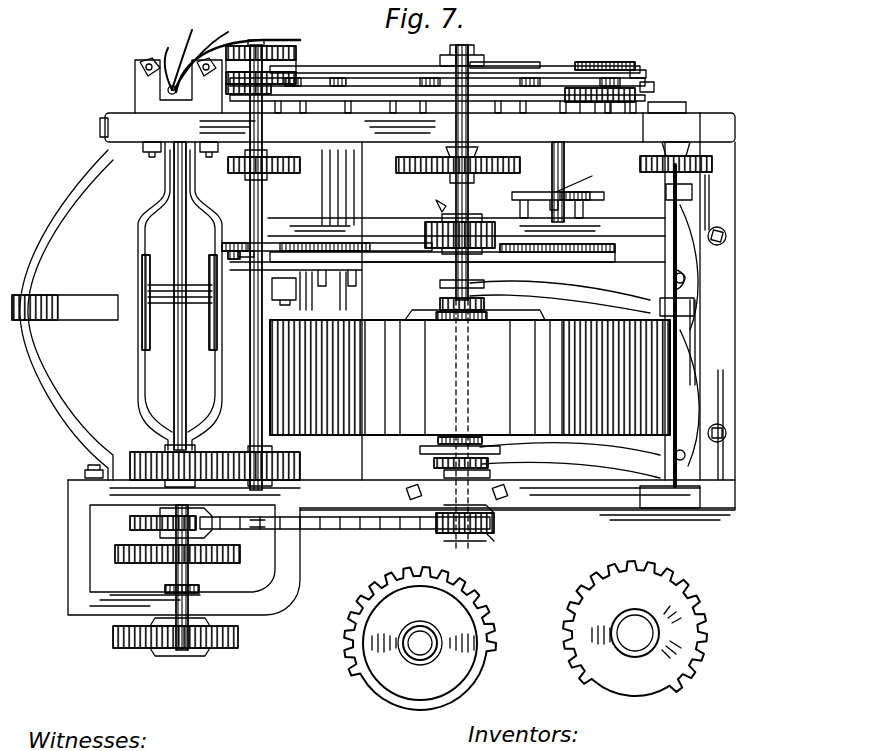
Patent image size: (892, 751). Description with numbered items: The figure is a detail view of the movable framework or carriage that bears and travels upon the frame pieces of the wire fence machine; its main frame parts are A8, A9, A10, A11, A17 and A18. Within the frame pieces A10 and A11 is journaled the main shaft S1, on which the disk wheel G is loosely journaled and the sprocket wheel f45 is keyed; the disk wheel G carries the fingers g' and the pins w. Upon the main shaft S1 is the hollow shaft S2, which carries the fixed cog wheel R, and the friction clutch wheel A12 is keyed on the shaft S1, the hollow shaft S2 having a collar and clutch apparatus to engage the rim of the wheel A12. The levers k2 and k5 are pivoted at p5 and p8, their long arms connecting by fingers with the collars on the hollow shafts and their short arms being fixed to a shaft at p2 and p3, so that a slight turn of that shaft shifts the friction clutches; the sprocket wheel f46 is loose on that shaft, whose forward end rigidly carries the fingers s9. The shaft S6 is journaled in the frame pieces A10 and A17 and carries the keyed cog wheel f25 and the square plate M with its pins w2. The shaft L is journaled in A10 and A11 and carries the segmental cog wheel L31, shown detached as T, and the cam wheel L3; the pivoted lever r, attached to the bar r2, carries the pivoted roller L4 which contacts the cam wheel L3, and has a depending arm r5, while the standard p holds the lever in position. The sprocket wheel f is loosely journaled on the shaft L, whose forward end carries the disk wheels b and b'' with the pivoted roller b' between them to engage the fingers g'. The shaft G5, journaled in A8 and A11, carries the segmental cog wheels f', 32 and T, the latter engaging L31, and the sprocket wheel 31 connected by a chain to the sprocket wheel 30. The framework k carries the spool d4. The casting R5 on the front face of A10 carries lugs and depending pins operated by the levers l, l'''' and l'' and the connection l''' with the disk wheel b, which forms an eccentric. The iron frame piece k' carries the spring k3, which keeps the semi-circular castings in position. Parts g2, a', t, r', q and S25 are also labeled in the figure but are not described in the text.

The main frame part A10 is at (417, 127).
The main frame part A9 is at (517, 326).
The sprocket wheel f46 is at (712, 164).
The fixing point of lever short arm p2 is at (692, 194).
The fixing point of lever short arm p3 is at (694, 310).
The lever pivot p5 is at (704, 456).
The lever pivot p8 is at (686, 286).
The main frame part A11 is at (401, 500).
The iron frame piece k' is at (66, 315).
The spring k3 is at (45, 308).
The frame work k is at (266, 296).
The spool d4 is at (180, 318).
The segmental cog wheel T is at (158, 452).
The segmental cog wheel L31 is at (300, 462).
The shaft L is at (250, 102).
The sprocket wheel f is at (274, 165).
The pivoted roller b' is at (265, 49).
The casting R5 is at (140, 94).
The lever l is at (168, 60).
The lever l'''' is at (184, 47).
The lever l'' is at (201, 49).
The connection l''' is at (238, 47).
The disk wheel b is at (455, 54).
The inner disk wheel b'' is at (437, 60).
The pins w is at (437, 105).
The disk wheel G is at (480, 68).
The fingers g' is at (552, 52).
The cog wheel f25 is at (640, 44).
The block g2 is at (640, 70).
The bracket a' is at (656, 76).
The fingers s9 is at (660, 104).
The pins w2 is at (616, 200).
The square plate M is at (586, 182).
The shaft S6 is at (564, 168).
The main frame part A18 is at (346, 206).
The main frame part A17 is at (466, 230).
The pivoted roller L4 is at (275, 243).
The cam wheel L3 is at (252, 200).
The stop t is at (236, 243).
The slide r' is at (246, 240).
The depending arm r5 is at (234, 259).
The pivoted lever r is at (447, 266).
The bar r2 is at (592, 244).
The standard p is at (350, 290).
The main shaft S1 is at (468, 190).
The sprocket wheel f45 is at (520, 162).
The pin q is at (438, 201).
The cog wheel R is at (495, 236).
The hollow shaft S2 is at (470, 276).
The lever k5 is at (610, 300).
The friction clutch wheel A12 is at (470, 372).
The gear S25 is at (488, 460).
The lever k2 is at (600, 470).
The main frame part A8 is at (184, 547).
The shaft G5 is at (188, 576).
The sprocket wheel 31 is at (130, 522).
The sprocket wheel 30 is at (460, 542).
The segmental cog wheel 32 is at (240, 554).
The segmental cog wheel f' is at (185, 637).